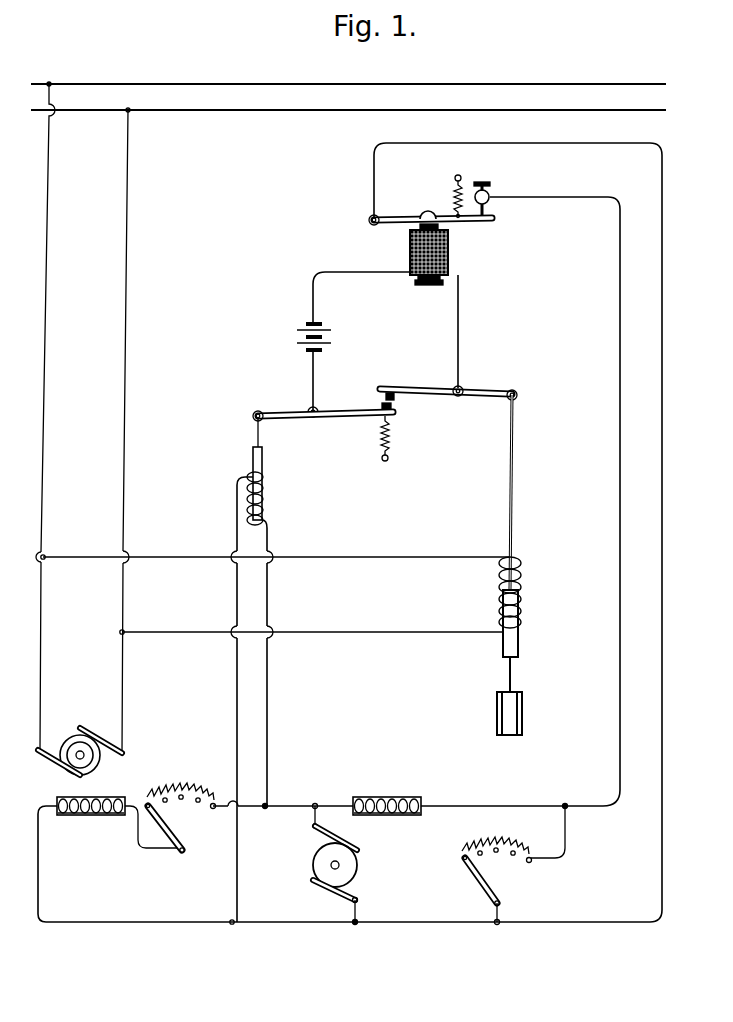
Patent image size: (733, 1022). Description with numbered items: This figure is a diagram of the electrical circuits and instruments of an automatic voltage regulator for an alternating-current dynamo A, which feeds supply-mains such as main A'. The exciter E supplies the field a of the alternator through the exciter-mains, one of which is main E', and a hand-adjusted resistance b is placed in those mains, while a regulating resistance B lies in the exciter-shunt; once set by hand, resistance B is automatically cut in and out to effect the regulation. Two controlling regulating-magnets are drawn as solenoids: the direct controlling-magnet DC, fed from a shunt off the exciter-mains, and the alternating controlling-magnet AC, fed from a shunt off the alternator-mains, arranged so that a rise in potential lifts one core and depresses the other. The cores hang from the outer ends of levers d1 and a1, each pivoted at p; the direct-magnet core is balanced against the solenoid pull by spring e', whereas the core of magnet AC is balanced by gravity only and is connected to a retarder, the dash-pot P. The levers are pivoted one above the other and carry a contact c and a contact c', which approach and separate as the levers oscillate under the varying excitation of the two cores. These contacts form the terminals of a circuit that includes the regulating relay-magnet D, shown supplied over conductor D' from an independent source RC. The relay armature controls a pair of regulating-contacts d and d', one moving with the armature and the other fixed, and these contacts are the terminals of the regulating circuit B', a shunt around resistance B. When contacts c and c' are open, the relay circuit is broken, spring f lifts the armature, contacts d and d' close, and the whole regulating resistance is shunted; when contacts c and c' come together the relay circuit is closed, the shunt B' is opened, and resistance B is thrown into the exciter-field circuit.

The supply-main A' is at (54, 415).
The alternating-current dynamo A is at (80, 739).
The field of the alternator a is at (91, 817).
The hand-adjusted resistance b is at (195, 817).
The exciter-main E' is at (442, 810).
The exciter E is at (346, 864).
The regulating resistance B is at (515, 864).
The regulating-circuit conductor B' is at (447, 532).
The dash-pot P is at (522, 712).
The alternating controlling-magnet AC is at (519, 620).
The direct controlling-magnet DC is at (262, 512).
The regulating relay-magnet D is at (441, 254).
The relay-circuit conductor D' is at (472, 331).
The independent source RC is at (296, 341).
The regulating-contact d is at (430, 225).
The regulating-contact d' is at (490, 196).
The lever of the direct controlling-magnet d1 is at (323, 403).
The spring f is at (455, 196).
The pivot p is at (458, 397).
The contact c is at (398, 395).
The contact c' is at (378, 398).
The spring e' is at (394, 438).
The lever of the alternating controlling-magnet a1 is at (448, 383).